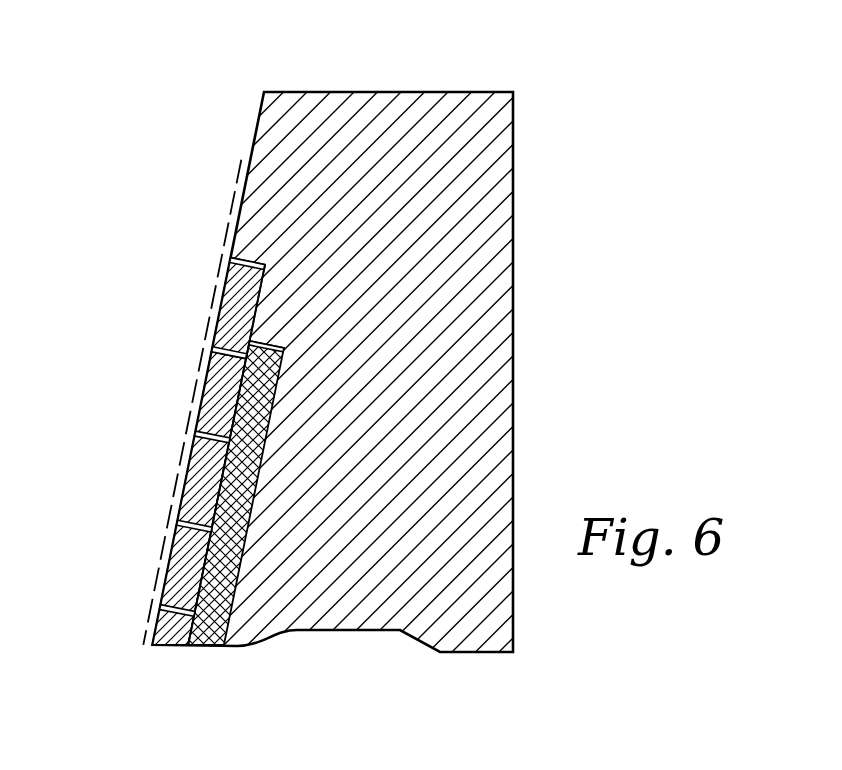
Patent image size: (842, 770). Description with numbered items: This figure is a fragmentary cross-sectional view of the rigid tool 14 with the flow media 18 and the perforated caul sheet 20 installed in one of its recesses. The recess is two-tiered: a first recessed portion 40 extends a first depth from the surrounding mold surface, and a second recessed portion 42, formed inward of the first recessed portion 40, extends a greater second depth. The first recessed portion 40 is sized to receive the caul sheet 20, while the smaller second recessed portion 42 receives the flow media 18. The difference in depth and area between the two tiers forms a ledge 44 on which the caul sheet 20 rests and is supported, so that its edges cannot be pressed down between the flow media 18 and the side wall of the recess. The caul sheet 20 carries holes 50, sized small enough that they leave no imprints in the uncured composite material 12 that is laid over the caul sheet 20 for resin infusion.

The rigid tool 14 is at (304, 92).
The composite material 12 is at (222, 262).
The first recessed portion 40 is at (247, 258).
The ledge 44 is at (258, 306).
The flow media 18 is at (275, 390).
The second recessed portion 42 is at (260, 470).
The caul sheet 20 is at (217, 410).
The holes 50 is at (210, 348).